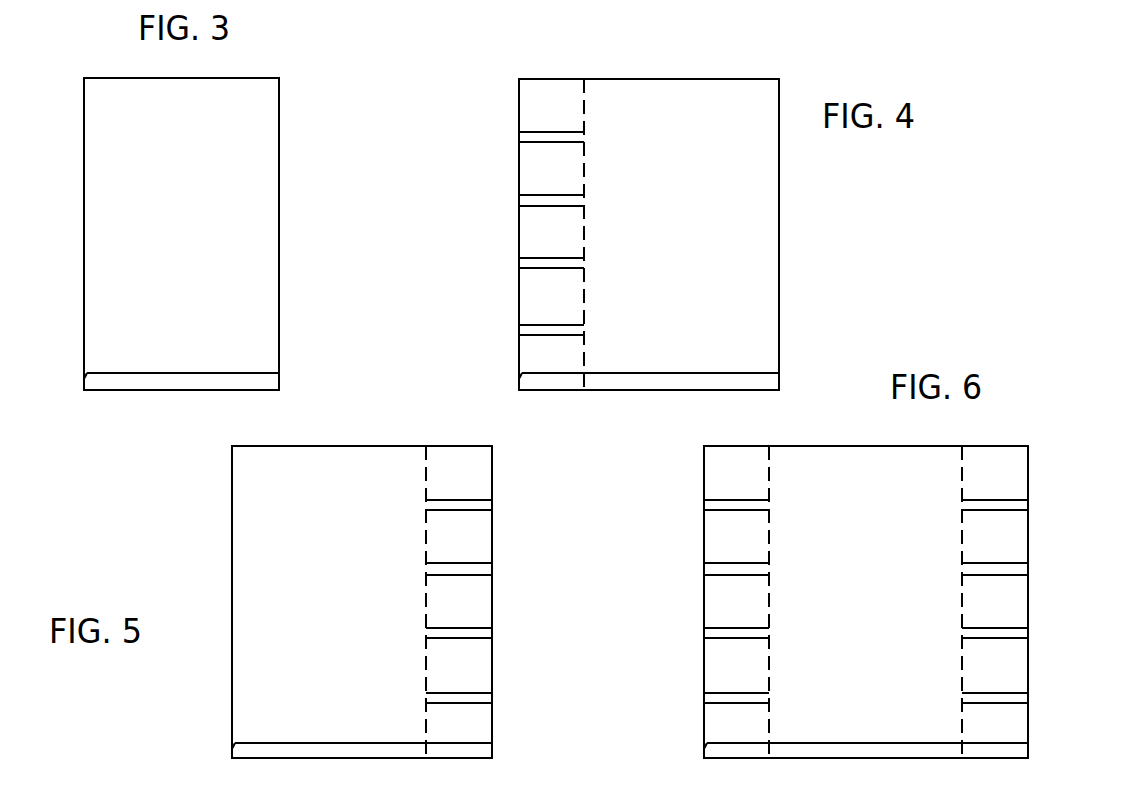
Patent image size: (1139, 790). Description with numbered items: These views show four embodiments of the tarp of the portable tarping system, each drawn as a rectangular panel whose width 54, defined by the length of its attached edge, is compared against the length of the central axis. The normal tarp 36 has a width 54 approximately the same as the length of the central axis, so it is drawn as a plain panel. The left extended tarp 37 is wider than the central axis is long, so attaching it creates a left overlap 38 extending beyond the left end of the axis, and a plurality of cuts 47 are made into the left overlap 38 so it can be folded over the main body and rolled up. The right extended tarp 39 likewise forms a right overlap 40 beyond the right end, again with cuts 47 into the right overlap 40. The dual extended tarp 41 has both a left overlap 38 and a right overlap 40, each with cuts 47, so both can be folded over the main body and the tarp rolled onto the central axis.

In FIG. 3, the normal tarp 36 is at (181, 234).
In FIG. 4, the left extended tarp 37 is at (649, 234).
In FIG. 4, the left overlap 38 is at (551, 234).
In FIG. 6, the left overlap 38 is at (736, 602).
In FIG. 5, the right extended tarp 39 is at (362, 602).
In FIG. 5, the right overlap 40 is at (459, 602).
In FIG. 6, the right overlap 40 is at (995, 602).
In FIG. 6, the dual extended tarp 41 is at (866, 602).
In FIG. 4, the cuts 47 is at (520, 138).
In FIG. 5, the cuts 47 is at (493, 507).
In FIG. 6, the cuts 47 is at (600, 538).
In FIG. 3, the width 54 is at (182, 373).
In FIG. 4, the width 54 is at (651, 373).
In FIG. 5, the width 54 is at (362, 743).
In FIG. 6, the width 54 is at (865, 743).